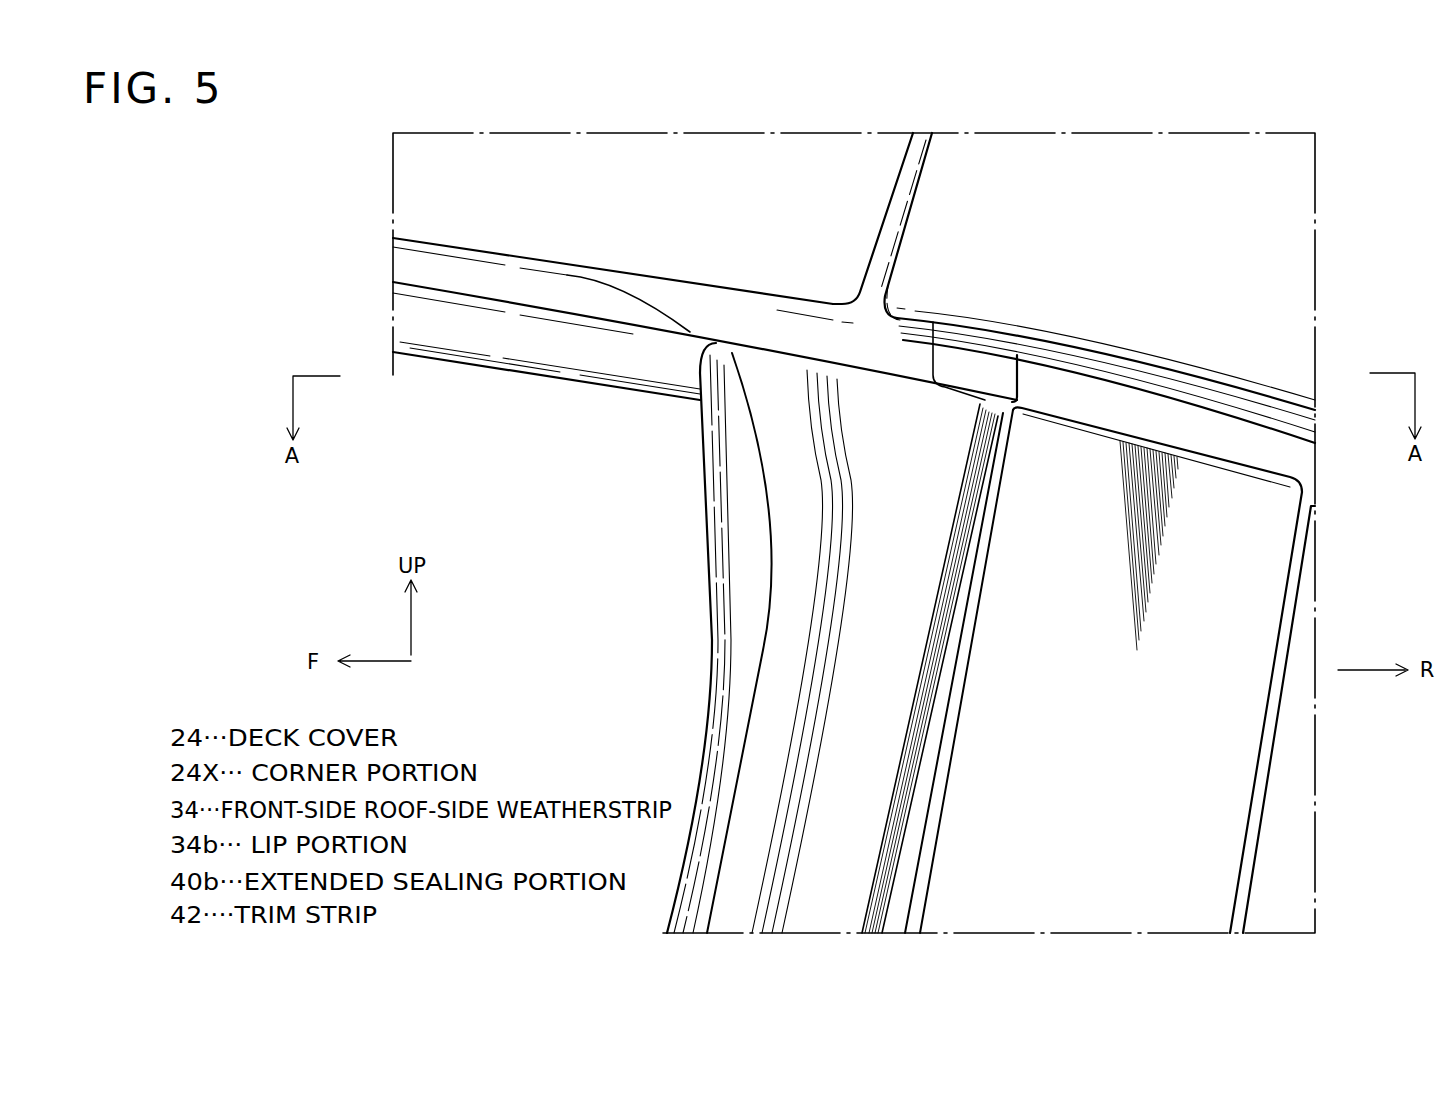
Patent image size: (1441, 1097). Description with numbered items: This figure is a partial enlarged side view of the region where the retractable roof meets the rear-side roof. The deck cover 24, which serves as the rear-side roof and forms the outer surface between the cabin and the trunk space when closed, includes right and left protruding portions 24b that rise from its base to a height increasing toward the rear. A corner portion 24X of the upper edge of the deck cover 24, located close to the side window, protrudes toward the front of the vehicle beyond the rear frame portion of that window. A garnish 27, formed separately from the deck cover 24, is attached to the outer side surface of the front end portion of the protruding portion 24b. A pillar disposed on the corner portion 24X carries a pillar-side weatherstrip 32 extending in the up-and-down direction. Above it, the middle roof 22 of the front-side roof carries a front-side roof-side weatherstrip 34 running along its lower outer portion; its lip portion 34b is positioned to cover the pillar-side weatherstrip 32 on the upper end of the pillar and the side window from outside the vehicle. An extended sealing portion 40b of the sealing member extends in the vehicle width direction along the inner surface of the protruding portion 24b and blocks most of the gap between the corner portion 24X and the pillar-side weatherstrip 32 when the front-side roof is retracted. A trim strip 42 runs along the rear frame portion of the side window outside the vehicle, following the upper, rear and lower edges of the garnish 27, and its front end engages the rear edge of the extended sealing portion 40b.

The middle roof 22 is at (708, 205).
The deck cover 24 is at (1116, 126).
The protruding portion 24b is at (1124, 246).
The corner portion 24X is at (930, 303).
The garnish 27 is at (1070, 770).
The pillar-side weatherstrip 32 is at (694, 775).
The front-side roof-side weatherstrip 34 is at (500, 373).
The lip portion 34b is at (645, 287).
The extended sealing portion 40b is at (960, 382).
The trim strip 42 is at (1137, 405).